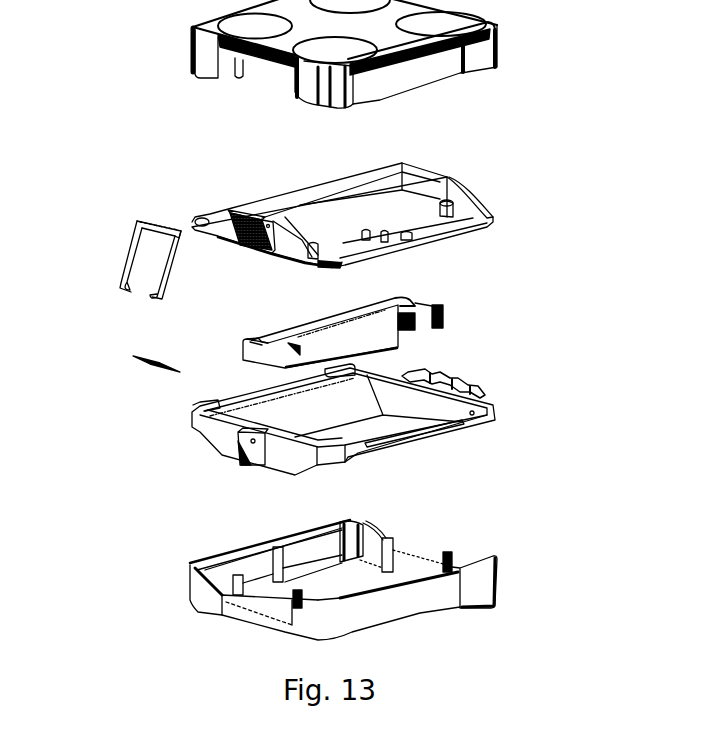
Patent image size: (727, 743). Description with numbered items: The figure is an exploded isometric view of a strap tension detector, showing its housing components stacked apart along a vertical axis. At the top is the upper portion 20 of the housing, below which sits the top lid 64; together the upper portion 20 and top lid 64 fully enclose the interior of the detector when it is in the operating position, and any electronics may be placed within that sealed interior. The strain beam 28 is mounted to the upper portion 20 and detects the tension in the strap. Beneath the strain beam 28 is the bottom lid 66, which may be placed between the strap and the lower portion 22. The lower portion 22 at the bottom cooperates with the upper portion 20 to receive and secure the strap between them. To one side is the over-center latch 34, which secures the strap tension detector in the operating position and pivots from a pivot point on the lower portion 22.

The upper portion 20 is at (500, 52).
The top lid 64 is at (467, 193).
The over-center latch 34 is at (130, 262).
The strain beam 28 is at (443, 317).
The bottom lid 66 is at (495, 413).
The lower portion 22 is at (498, 580).